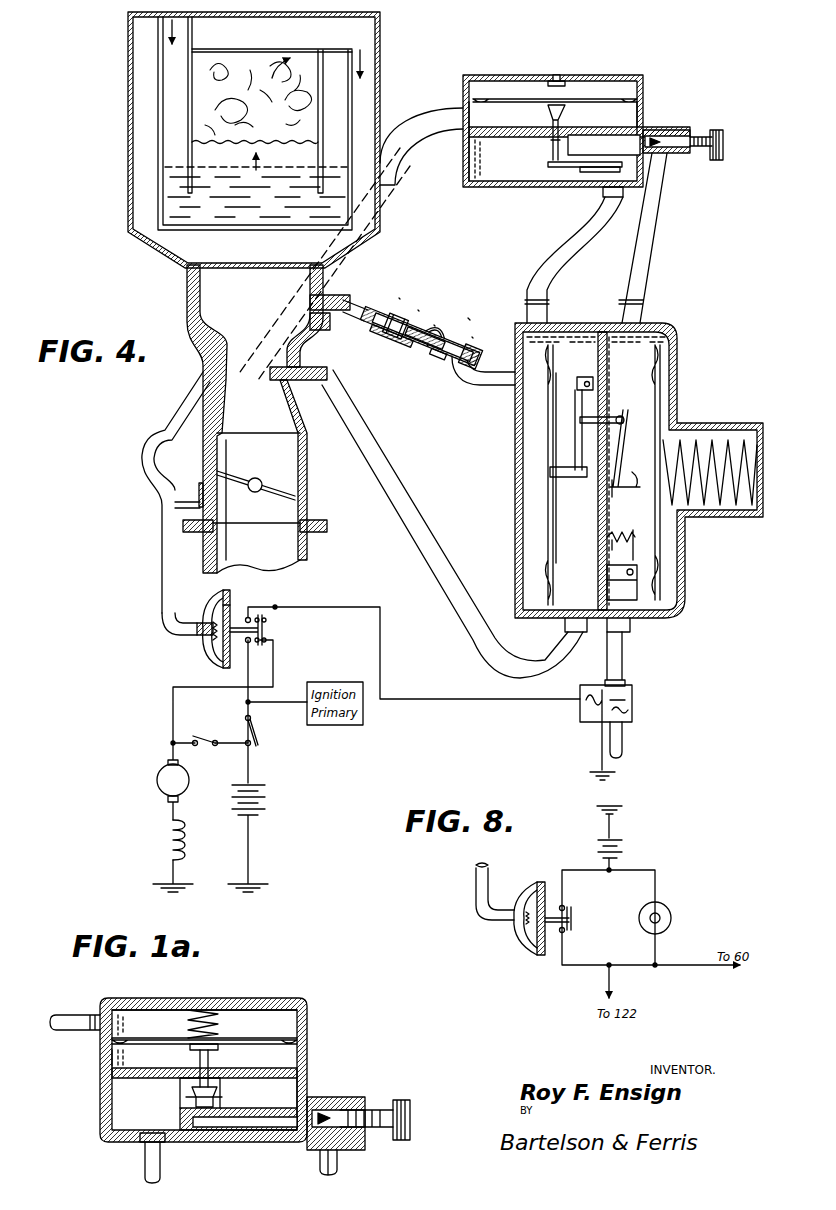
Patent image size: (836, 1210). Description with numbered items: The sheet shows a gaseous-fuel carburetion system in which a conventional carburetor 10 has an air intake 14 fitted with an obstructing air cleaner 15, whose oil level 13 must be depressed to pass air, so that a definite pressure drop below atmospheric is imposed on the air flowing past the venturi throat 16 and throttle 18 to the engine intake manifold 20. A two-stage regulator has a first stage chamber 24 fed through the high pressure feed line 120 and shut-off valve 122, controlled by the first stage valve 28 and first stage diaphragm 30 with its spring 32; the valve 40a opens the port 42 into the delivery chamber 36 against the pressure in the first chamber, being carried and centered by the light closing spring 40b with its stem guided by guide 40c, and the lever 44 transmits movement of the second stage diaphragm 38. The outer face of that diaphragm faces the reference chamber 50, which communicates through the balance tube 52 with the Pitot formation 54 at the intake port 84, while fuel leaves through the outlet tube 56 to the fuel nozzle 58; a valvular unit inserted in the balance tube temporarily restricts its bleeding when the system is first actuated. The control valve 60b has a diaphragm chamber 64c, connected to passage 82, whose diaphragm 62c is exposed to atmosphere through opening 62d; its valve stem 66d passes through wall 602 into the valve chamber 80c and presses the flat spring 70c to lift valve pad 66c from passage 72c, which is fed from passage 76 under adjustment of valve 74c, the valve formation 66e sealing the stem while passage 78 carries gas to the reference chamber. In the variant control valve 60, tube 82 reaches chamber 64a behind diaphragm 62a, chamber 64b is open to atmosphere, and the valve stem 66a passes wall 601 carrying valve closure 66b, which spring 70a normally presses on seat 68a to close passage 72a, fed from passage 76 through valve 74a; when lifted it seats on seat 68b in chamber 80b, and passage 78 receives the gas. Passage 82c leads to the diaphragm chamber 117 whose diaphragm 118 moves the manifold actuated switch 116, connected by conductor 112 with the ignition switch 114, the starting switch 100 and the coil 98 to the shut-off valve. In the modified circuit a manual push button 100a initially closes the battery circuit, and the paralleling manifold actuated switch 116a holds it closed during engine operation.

In FIG. 4, the carburetor 10 is at (312, 477).
In FIG. 4, the oil level 13 is at (172, 158).
In FIG. 4, the air intake 14 is at (228, 419).
In FIG. 4, the air cleaner 15 is at (124, 128).
In FIG. 4, the venturi throat 16 is at (281, 316).
In FIG. 4, the throttle 18 is at (258, 480).
In FIG. 4, the engine intake manifold 20 is at (255, 503).
In FIG. 4, the first stage chamber 24 is at (630, 538).
In FIG. 4, the first stage valve 28 is at (640, 596).
In FIG. 4, the first stage diaphragm 30 is at (663, 392).
In FIG. 4, the spring 32 is at (722, 445).
In FIG. 4, the delivery chamber 36 is at (586, 562).
In FIG. 4, the second stage diaphragm 38 is at (548, 442).
In FIG. 4, the valve 40a is at (640, 400).
In FIG. 4, the light closing spring 40b is at (630, 440).
In FIG. 4, the guide 40c is at (578, 388).
In FIG. 4, the port 42 is at (605, 412).
In FIG. 4, the lever 44 is at (568, 455).
In FIG. 4, the reference chamber 50 is at (530, 500).
In FIG. 4, the balance tube 52 is at (359, 306).
In FIG. 4, the Pitot formation 54 is at (327, 291).
In FIG. 4, the outlet tube 56 is at (457, 580).
In FIG. 4, the fuel nozzle 58 is at (283, 384).
In FIG. 1A, the control valve 60 is at (97, 1112).
In FIG. 4, the control valve 60b is at (658, 83).
In FIG. 1A, the wall 601 is at (148, 1080).
In FIG. 4, the wall 602 is at (613, 130).
In FIG. 1A, the diaphragm 62a is at (247, 1037).
In FIG. 4, the diaphragm 62c is at (597, 97).
In FIG. 4, the opening 62d is at (553, 80).
In FIG. 1A, the chamber 64a is at (153, 1025).
In FIG. 1A, the chamber 64b is at (148, 1060).
In FIG. 4, the diaphragm chamber 64c is at (495, 110).
In FIG. 1A, the valve stem 66a is at (209, 1062).
In FIG. 1A, the valve closure 66b is at (190, 1098).
In FIG. 4, the valve pad 66c is at (577, 165).
In FIG. 4, the valve stem 66d is at (550, 146).
In FIG. 4, the valve formation 66e is at (556, 116).
In FIG. 1A, the valve seat 68a is at (217, 1108).
In FIG. 1A, the valve seat 68b is at (218, 1093).
In FIG. 1A, the spring 70a is at (238, 1006).
In FIG. 4, the flat spring 70c is at (598, 168).
In FIG. 1A, the passage 72a is at (270, 1126).
In FIG. 4, the passage 72c is at (604, 145).
In FIG. 1A, the valve 74a is at (331, 1117).
In FIG. 4, the valve 74c is at (660, 141).
In FIG. 4, the passage 76 is at (660, 237).
In FIG. 1A, the passage 76 is at (338, 1168).
In FIG. 4, the passage 78 is at (562, 262).
In FIG. 1A, the passage 78 is at (145, 1168).
In FIG. 1A, the chamber 80b is at (290, 1090).
In FIG. 4, the valve chamber 80c is at (495, 159).
In FIG. 4, the passage 82 is at (440, 122).
In FIG. 1A, the passage 82 is at (60, 1028).
In FIG. 4, the passage 82c is at (162, 567).
In FIG. 4, the port 84 is at (332, 330).
In FIG. 4, the coil 98 is at (158, 776).
In FIG. 4, the switch 100 is at (222, 712).
In FIG. 8, the manual push button 100a is at (668, 912).
In FIG. 4, the conductor 112 is at (462, 698).
In FIG. 4, the ignition switch 114 is at (257, 735).
In FIG. 4, the manifold actuated switch 116 is at (272, 630).
In FIG. 8, the manifold actuated switch 116a is at (513, 945).
In FIG. 4, the diaphragm chamber 117 is at (218, 648).
In FIG. 4, the diaphragm 118 is at (233, 606).
In FIG. 4, the high pressure feed line 120 is at (624, 648).
In FIG. 4, the shut-off valve 122 is at (635, 708).